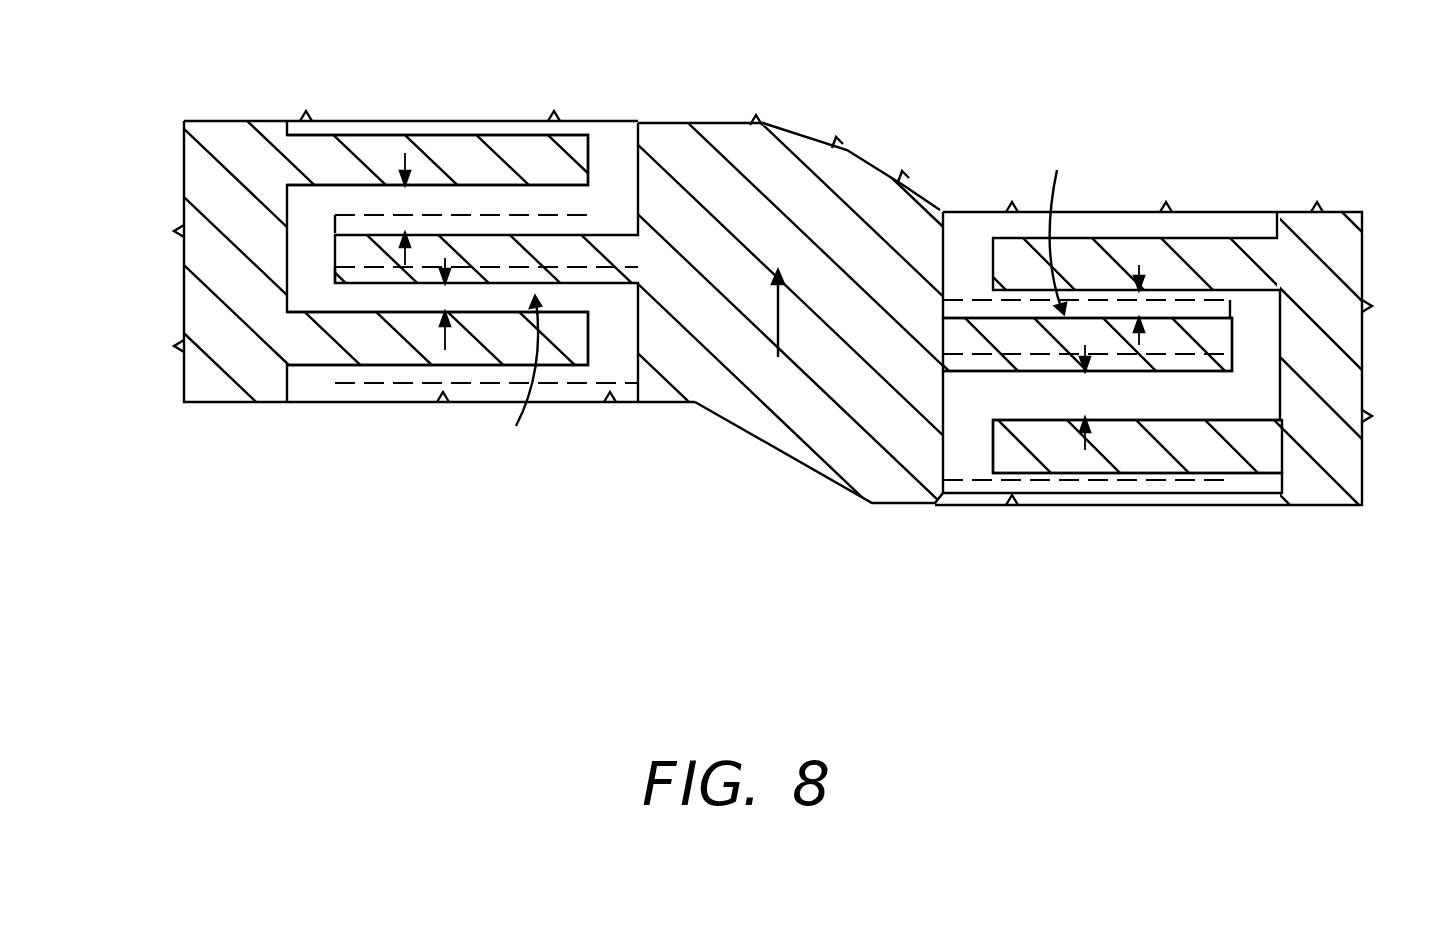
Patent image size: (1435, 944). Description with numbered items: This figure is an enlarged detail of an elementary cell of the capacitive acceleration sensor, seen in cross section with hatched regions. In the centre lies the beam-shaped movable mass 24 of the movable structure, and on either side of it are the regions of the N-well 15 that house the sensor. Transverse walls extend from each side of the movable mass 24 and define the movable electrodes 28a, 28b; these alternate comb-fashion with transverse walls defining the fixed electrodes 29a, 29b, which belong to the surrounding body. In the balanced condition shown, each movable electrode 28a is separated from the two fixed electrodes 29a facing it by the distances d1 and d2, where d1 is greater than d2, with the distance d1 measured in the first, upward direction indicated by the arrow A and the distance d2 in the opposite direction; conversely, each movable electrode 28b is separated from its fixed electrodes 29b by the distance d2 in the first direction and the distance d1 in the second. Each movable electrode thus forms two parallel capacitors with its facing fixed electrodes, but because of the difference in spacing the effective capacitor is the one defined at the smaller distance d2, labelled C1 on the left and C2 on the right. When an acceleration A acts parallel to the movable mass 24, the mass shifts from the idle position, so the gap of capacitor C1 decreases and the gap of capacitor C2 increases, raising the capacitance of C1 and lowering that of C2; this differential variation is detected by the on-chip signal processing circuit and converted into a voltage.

The N-well 15 is at (215, 272).
The movable mass 24 is at (741, 472).
The movable electrode 28a is at (622, 260).
The movable electrode 28b is at (965, 348).
The fixed electrode 29a is at (337, 158).
The fixed electrode 29b is at (1246, 445).
The elementary capacitor C1 is at (520, 375).
The elementary capacitor C2 is at (1057, 227).
The distance d1 is at (407, 213).
The distance d2 is at (445, 300).
The arrow A is at (774, 290).